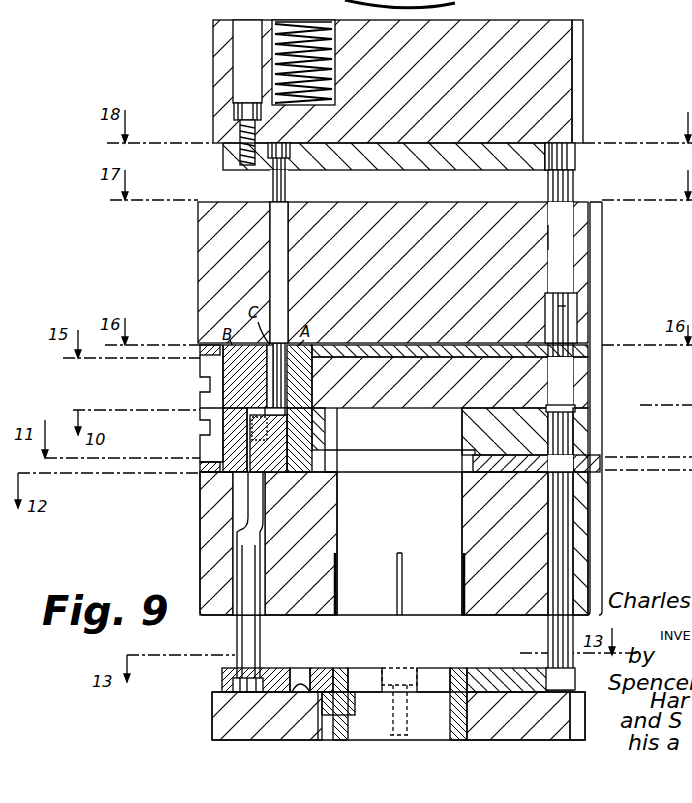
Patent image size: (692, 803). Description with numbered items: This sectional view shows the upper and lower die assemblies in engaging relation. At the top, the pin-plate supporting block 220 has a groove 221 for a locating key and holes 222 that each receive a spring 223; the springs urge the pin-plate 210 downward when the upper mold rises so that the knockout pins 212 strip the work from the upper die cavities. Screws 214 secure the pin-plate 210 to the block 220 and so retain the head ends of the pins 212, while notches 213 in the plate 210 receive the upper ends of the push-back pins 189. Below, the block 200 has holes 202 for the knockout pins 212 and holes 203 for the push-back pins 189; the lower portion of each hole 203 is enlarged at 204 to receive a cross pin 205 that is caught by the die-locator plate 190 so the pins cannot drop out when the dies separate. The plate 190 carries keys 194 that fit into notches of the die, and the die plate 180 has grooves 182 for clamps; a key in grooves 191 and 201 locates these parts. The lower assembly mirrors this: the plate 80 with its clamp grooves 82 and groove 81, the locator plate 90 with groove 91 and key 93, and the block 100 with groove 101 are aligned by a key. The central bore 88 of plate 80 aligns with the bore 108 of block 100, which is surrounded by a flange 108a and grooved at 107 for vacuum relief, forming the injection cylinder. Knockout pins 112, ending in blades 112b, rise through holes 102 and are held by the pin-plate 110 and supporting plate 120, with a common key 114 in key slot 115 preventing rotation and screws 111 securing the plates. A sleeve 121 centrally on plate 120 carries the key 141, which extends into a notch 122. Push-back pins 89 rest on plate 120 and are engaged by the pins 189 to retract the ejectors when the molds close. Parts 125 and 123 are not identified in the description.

The pin-plate supporting block 220 is at (213, 58).
The groove 221 is at (583, 72).
The screw 214 is at (243, 100).
The hole 222 is at (335, 62).
The spring 223 is at (308, 22).
The pin-plate 210 is at (223, 160).
The knockout pin 212 is at (286, 185).
The notch 213 is at (545, 155).
The push-back pin 189 is at (574, 183).
The block 200 is at (198, 263).
The groove 201 is at (603, 258).
The hole 202 is at (289, 258).
The hole 203 is at (548, 237).
The enlarged portion 204 is at (545, 312).
The cross pin 205 is at (562, 308).
The groove 191 is at (589, 350).
The die-locator plate 190 is at (200, 352).
The key 194 is at (200, 345).
The die plate 180 is at (200, 405).
The groove 182 is at (200, 386).
The central bore 88 is at (462, 420).
The groove 81 is at (580, 416).
The push-back pin 89 is at (574, 432).
The groove 91 is at (601, 458).
The flange 108a is at (475, 458).
The block 100 is at (200, 520).
The groove 101 is at (590, 512).
The hole 102 is at (237, 530).
The knock-out pin 112 is at (237, 632).
The blade 112b is at (265, 500).
The plate 80 is at (200, 422).
The groove 82 is at (222, 442).
The locator plate 90 is at (200, 464).
The key 93 is at (200, 474).
The groove 107 is at (399, 553).
The bore 108 is at (425, 615).
The pin-plate 110 is at (222, 680).
The key 114 is at (263, 680).
The key slot 115 is at (303, 682).
The sleeve 121 is at (340, 740).
The key 141 is at (356, 700).
The notch 122 is at (320, 735).
The screw 111 is at (417, 668).
The pin-plate supporting plate 120 is at (212, 720).
The end plate 125 is at (576, 741).
The collar 123 is at (548, 672).